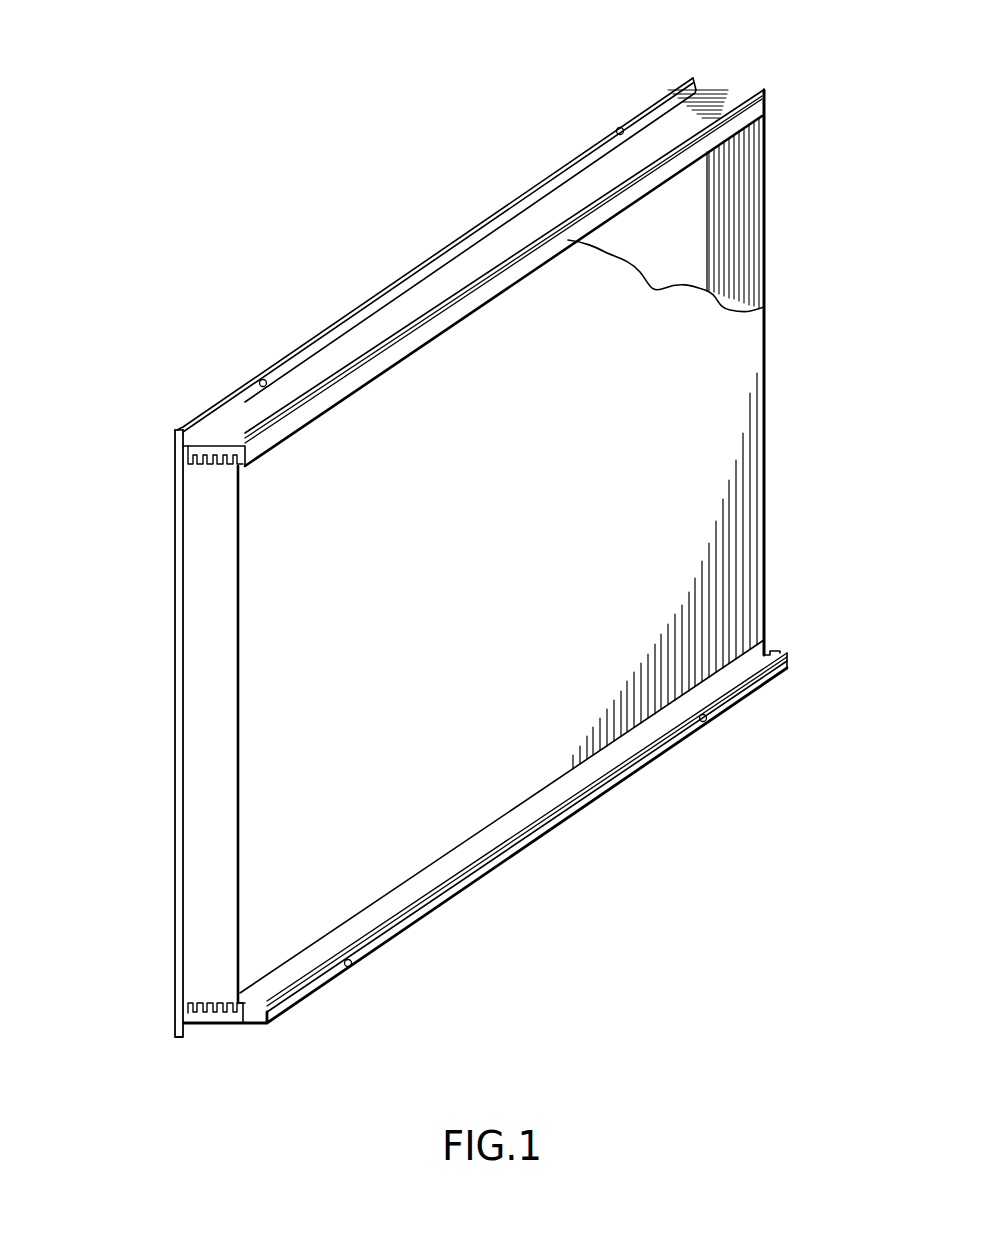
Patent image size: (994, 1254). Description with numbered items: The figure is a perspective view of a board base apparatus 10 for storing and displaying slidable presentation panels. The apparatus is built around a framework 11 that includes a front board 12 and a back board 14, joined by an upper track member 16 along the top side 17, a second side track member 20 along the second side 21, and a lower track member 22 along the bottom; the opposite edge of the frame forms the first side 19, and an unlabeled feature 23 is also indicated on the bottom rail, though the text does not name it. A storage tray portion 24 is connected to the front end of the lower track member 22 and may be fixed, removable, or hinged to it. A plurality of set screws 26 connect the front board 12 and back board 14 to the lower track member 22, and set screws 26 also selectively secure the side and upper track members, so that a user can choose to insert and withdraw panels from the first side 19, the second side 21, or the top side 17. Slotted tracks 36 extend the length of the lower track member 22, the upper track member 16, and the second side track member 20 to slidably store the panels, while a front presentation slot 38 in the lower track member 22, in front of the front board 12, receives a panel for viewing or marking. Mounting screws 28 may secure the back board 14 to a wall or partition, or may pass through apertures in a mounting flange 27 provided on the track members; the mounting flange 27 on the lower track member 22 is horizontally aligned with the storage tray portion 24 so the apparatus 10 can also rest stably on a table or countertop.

The board base apparatus 10 is at (278, 324).
The framework 11 is at (767, 140).
The front board 12 is at (692, 386).
The back board 14 is at (681, 224).
The upper track member 16 is at (578, 192).
The top side 17 is at (492, 252).
The first side 19 is at (205, 613).
The second side track member 20 is at (766, 241).
The second side 21 is at (780, 447).
The lower track member 22 is at (215, 1040).
The bottom rail 23 is at (537, 857).
The storage tray portion 24 is at (396, 952).
The set screws 26 is at (682, 150).
The mounting flange 27 is at (213, 405).
The mounting screws 28 is at (618, 128).
The slotted tracks 36 is at (215, 465).
The front presentation slot 38 is at (243, 1024).